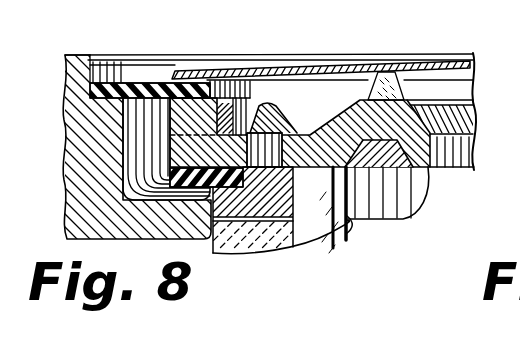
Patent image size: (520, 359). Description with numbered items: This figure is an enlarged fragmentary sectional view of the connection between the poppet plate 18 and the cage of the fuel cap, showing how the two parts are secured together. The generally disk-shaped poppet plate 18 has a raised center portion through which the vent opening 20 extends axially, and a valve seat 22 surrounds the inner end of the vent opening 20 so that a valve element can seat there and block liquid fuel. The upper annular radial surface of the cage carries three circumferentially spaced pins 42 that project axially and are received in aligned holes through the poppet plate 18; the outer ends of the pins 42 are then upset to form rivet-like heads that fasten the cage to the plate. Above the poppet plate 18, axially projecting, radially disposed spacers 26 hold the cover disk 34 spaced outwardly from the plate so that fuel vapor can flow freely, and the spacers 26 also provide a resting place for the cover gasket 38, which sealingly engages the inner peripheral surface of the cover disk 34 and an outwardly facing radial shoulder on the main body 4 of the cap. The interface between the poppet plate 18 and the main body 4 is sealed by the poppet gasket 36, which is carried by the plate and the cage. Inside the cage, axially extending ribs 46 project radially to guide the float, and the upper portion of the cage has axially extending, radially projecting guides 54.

The main body 4 is at (82, 120).
The poppet plate 18 is at (313, 133).
The vent opening 20 is at (455, 118).
The valve seat 22 is at (403, 219).
The radially disposed spacers 26 is at (222, 104).
The cover disk 34 is at (380, 72).
The poppet gasket 36 is at (172, 177).
The cover gasket 38 is at (118, 93).
The pins 42 is at (266, 105).
The ribs 46 is at (349, 234).
The guides 54 is at (244, 251).